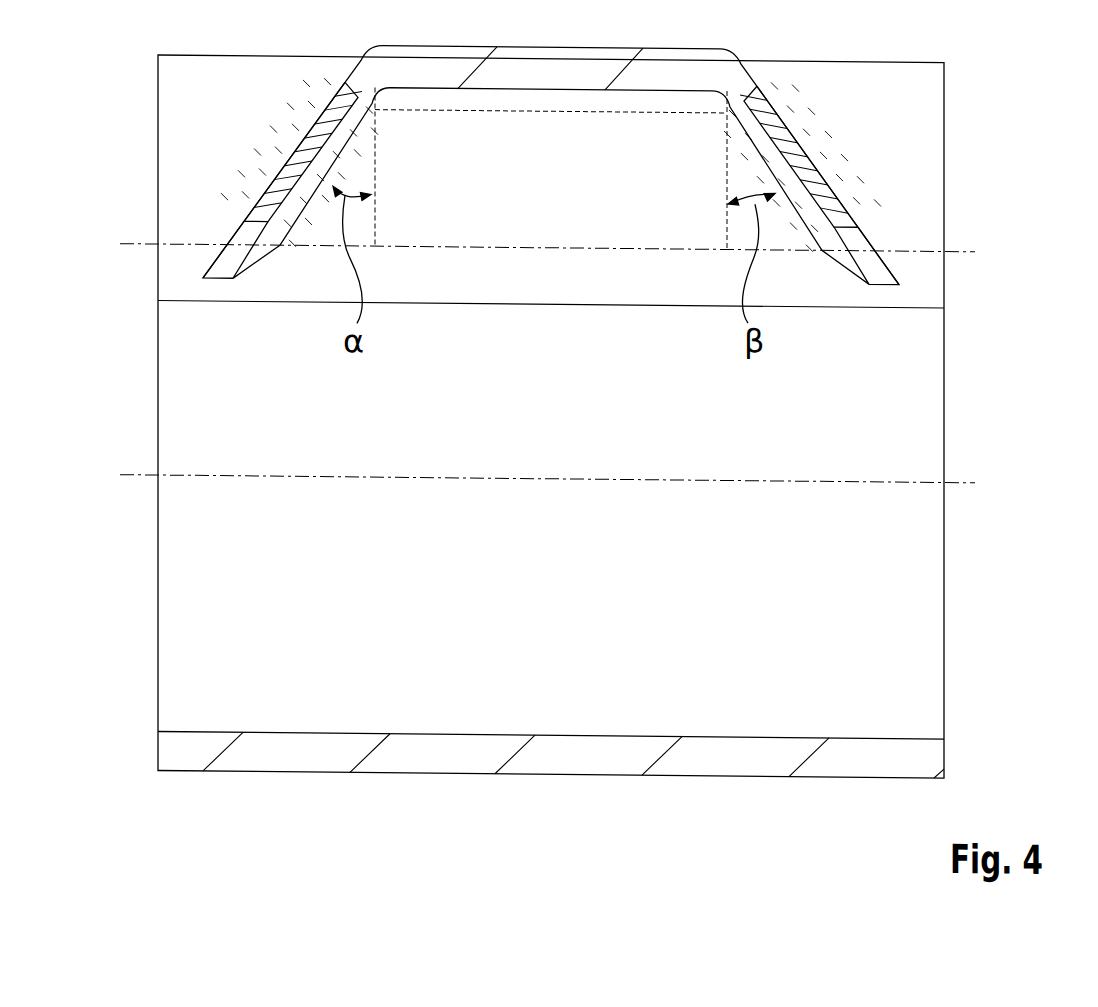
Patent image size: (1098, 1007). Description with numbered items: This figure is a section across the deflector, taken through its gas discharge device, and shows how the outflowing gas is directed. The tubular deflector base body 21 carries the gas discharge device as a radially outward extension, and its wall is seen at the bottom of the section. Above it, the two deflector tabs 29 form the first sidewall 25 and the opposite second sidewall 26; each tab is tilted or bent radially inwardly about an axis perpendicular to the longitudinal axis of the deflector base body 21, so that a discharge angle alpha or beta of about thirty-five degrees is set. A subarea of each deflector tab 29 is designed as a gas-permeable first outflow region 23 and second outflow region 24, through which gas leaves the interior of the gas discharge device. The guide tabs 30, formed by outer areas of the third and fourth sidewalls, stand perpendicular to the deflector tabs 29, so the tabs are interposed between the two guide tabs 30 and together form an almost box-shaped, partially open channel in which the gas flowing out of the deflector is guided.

The deflector base body 21 is at (717, 753).
The first outflow region 23 is at (843, 136).
The second outflow region 24 is at (264, 131).
The first sidewall 25 is at (870, 234).
The second sidewall 26 is at (247, 233).
The deflector tabs 29 is at (557, 181).
The guide tabs 30 is at (178, 131).